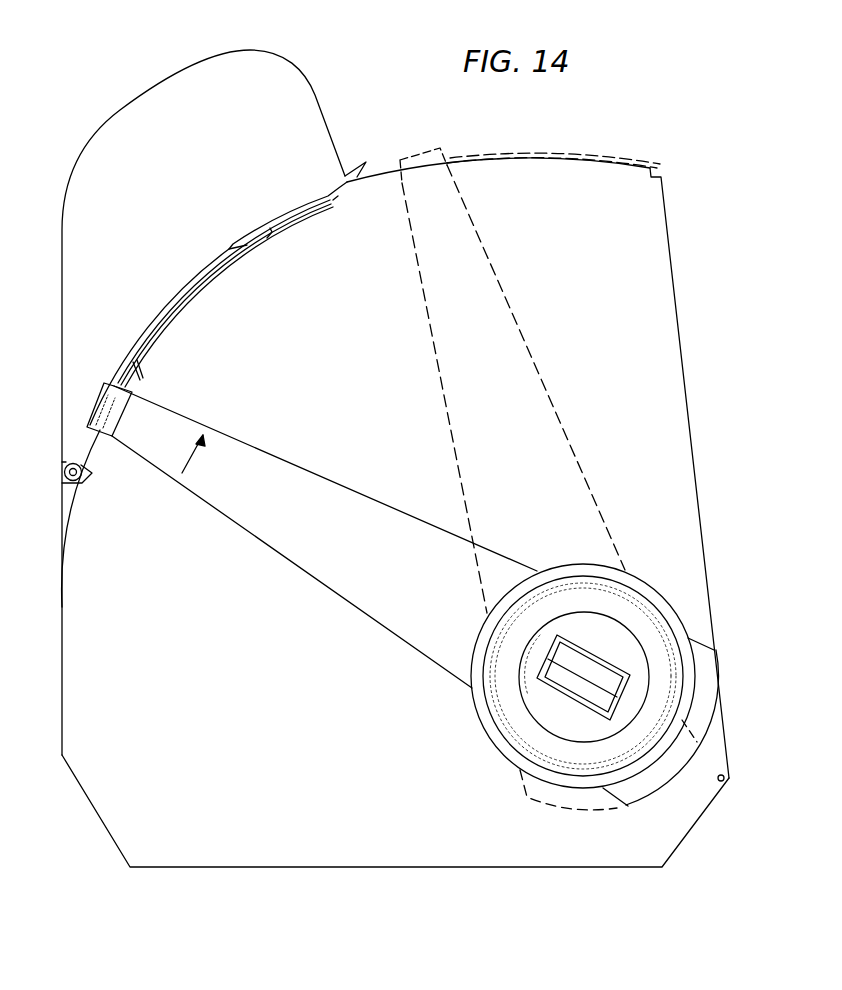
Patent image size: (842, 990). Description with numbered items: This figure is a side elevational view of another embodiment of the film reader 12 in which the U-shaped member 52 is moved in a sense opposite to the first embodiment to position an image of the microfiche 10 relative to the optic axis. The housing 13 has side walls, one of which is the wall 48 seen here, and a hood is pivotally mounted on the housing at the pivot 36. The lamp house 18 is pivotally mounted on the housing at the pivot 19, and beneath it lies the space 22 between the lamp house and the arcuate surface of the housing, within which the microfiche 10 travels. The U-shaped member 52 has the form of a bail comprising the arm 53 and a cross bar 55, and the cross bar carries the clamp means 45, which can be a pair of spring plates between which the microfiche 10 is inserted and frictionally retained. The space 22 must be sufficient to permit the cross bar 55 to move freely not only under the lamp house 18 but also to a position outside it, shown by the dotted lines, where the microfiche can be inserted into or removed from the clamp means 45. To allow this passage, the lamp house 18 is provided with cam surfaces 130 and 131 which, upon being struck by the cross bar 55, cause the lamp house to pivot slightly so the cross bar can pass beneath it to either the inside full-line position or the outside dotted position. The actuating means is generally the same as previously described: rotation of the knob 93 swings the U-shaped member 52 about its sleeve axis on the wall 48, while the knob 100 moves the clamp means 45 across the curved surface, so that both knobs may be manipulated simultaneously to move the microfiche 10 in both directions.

The microfiche 10 is at (219, 278).
The film reader 12 is at (688, 372).
The housing 13 is at (370, 852).
The lamp housing 18 is at (77, 186).
The pivot 19 is at (62, 465).
The space 22 is at (183, 300).
The pivot 36 is at (727, 781).
The clamp means 45 is at (452, 162).
The side wall 48 is at (373, 381).
The U-shaped member 52 is at (294, 563).
The arm 53 is at (342, 502).
The cross bar 55 is at (106, 405).
The knob 93 is at (557, 575).
The knob 100 is at (555, 673).
The cam surface 130 is at (233, 246).
The cam surface 131 is at (357, 177).